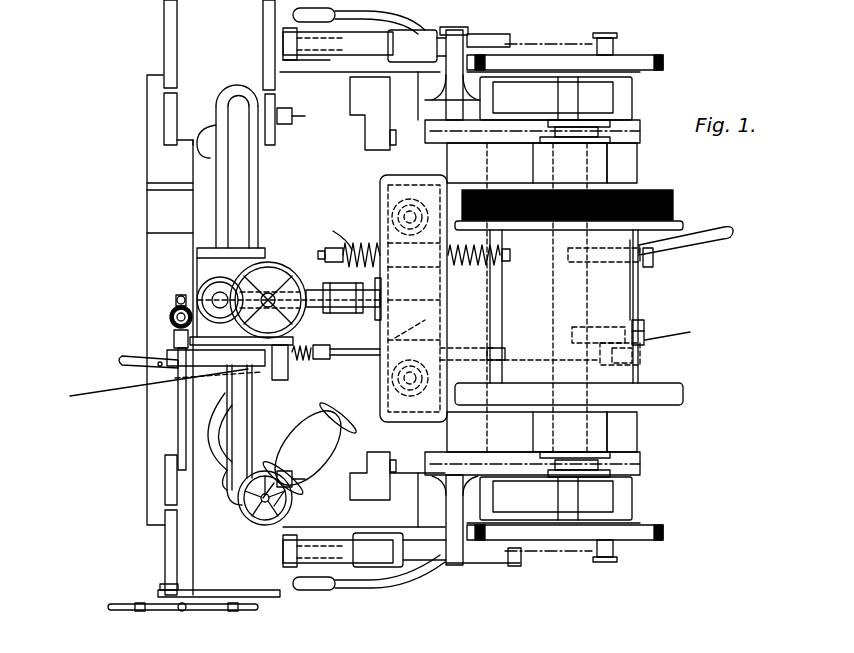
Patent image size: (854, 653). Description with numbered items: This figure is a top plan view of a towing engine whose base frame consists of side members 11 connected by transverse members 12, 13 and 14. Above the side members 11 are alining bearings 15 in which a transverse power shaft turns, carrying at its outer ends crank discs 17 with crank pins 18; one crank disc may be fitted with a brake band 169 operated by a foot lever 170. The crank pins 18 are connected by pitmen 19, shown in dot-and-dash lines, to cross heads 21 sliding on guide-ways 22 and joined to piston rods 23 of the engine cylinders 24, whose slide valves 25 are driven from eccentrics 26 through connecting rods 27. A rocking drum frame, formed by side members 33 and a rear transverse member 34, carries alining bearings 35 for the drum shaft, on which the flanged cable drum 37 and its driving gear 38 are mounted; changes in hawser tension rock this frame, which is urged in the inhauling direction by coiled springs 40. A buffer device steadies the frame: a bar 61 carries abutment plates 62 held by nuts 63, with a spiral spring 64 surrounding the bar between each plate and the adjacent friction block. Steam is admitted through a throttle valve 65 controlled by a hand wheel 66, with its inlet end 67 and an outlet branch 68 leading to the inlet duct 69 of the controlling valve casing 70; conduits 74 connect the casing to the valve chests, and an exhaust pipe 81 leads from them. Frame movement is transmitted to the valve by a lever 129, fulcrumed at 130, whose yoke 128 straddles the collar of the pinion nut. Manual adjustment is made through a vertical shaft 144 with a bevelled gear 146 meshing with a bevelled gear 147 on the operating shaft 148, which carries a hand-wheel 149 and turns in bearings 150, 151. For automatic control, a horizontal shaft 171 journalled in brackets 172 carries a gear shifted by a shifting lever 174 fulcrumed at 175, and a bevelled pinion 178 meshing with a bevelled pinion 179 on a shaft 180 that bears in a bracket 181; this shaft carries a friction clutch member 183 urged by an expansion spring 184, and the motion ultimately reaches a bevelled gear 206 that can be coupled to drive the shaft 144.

The side members 11 is at (345, 108).
The transverse member 12 is at (157, 508).
The transverse member 13 is at (450, 128).
The transverse member 14 is at (610, 140).
The alining bearings 15 is at (610, 98).
The crank discs 17 is at (622, 62).
The crank pins 18 is at (605, 32).
The pitmen 19 is at (538, 46).
The cross heads 21 is at (418, 40).
The guide-ways 22 is at (340, 42).
The piston rods 23 is at (345, 58).
The engine cylinders 24 is at (187, 38).
The slide valves 25 is at (187, 122).
The eccentrics 26 is at (606, 134).
The connecting rods 27 is at (366, 138).
The side members 33 is at (638, 173).
The rear transverse member 34 is at (393, 172).
The alining bearings 35 is at (535, 162).
The flanged cable drum 37 is at (620, 307).
The driving gear 38 is at (678, 200).
The coiled springs 40 is at (394, 217).
The bar 61 is at (326, 256).
The abutment plate 62 is at (333, 231).
The nuts 63 is at (372, 241).
The spiral spring 64 is at (383, 266).
The throttle valve 65 is at (352, 470).
The hand wheel 66 is at (262, 520).
The inlet end 67 is at (346, 413).
The outlet branch 68 is at (307, 447).
The inlet duct 69 is at (272, 396).
The casing 70 is at (290, 264).
The conduits 74 is at (215, 205).
The exhaust pipe 81 is at (240, 195).
The yoke 128 is at (206, 288).
The lever 129 is at (368, 315).
The fulcrum 130 is at (345, 310).
The vertical shaft 144 is at (175, 312).
The bevelled gear 146 is at (170, 319).
The bevelled gear 147 is at (173, 338).
The operating shaft 148 is at (176, 388).
The hand-wheel 149 is at (167, 612).
The bearing 150 is at (122, 360).
The bearing 151 is at (158, 592).
The brake band 169 is at (665, 63).
The foot lever 170 is at (282, 630).
The horizontal shaft 171 is at (639, 282).
The brackets 172 is at (654, 258).
The shifting lever 174 is at (718, 237).
The fulcrum 175 is at (598, 262).
The bevelled pinion 178 is at (690, 332).
The bevelled pinion 179 is at (640, 353).
The shaft 180 is at (345, 359).
The bracket 181 is at (570, 340).
The friction clutch member 183 is at (283, 382).
The expansion spring 184 is at (300, 360).
The bevelled gear 206 is at (134, 393).